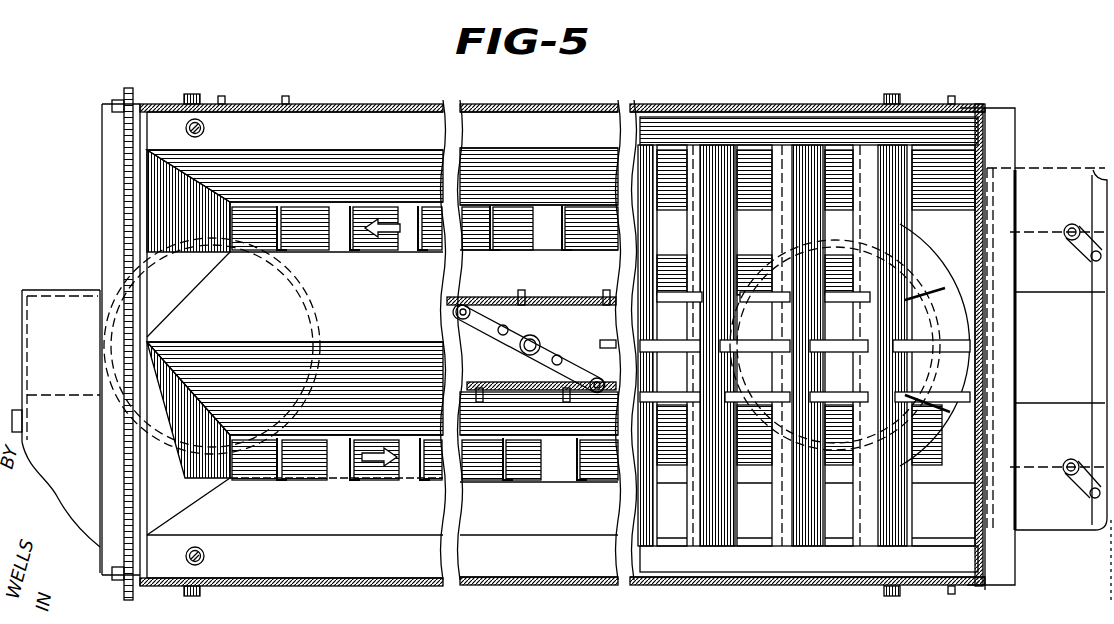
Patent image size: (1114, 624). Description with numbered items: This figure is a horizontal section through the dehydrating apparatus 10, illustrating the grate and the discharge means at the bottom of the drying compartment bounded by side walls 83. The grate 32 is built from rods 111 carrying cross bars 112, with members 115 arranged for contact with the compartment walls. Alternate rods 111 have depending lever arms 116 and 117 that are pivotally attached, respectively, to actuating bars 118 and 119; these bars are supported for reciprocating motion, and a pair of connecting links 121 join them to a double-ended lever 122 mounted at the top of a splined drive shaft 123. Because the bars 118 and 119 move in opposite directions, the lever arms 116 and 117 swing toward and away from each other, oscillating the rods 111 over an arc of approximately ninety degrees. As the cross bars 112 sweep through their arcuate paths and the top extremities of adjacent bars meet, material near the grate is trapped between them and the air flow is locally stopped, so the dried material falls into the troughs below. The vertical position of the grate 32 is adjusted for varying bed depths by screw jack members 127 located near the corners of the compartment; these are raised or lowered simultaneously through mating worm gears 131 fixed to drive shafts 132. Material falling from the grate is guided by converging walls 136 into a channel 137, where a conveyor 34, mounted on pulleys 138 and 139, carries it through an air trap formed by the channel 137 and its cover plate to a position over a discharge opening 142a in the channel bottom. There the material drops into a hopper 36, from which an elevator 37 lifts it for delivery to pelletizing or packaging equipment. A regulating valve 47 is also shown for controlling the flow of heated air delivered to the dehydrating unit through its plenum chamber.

The dehydrating apparatus 10 is at (400, 100).
The grate 32 is at (756, 528).
The conveyor 34 is at (476, 250).
The hopper 36 is at (56, 290).
The elevator 37 is at (28, 436).
The regulating valve 47 is at (1080, 250).
The side wall 83 is at (526, 110).
The rod 111 is at (903, 226).
The cross bar 112 is at (704, 150).
The member 115 is at (798, 120).
The lever arm 116 is at (570, 392).
The lever arm 117 is at (520, 292).
The actuating bar 118 is at (524, 392).
The actuating bar 119 is at (552, 296).
The connecting link 121 is at (484, 324).
The double-ended lever 122 is at (548, 348).
The splined drive shaft 123 is at (538, 334).
The screw jack member 127 is at (205, 128).
The worm gear 131 is at (204, 85).
The drive shaft 132 is at (262, 107).
The converging wall 136 is at (295, 342).
The channel 137 is at (124, 100).
The pulley 138 is at (918, 438).
The pulley 139 is at (286, 268).
The discharge opening 142a is at (110, 292).